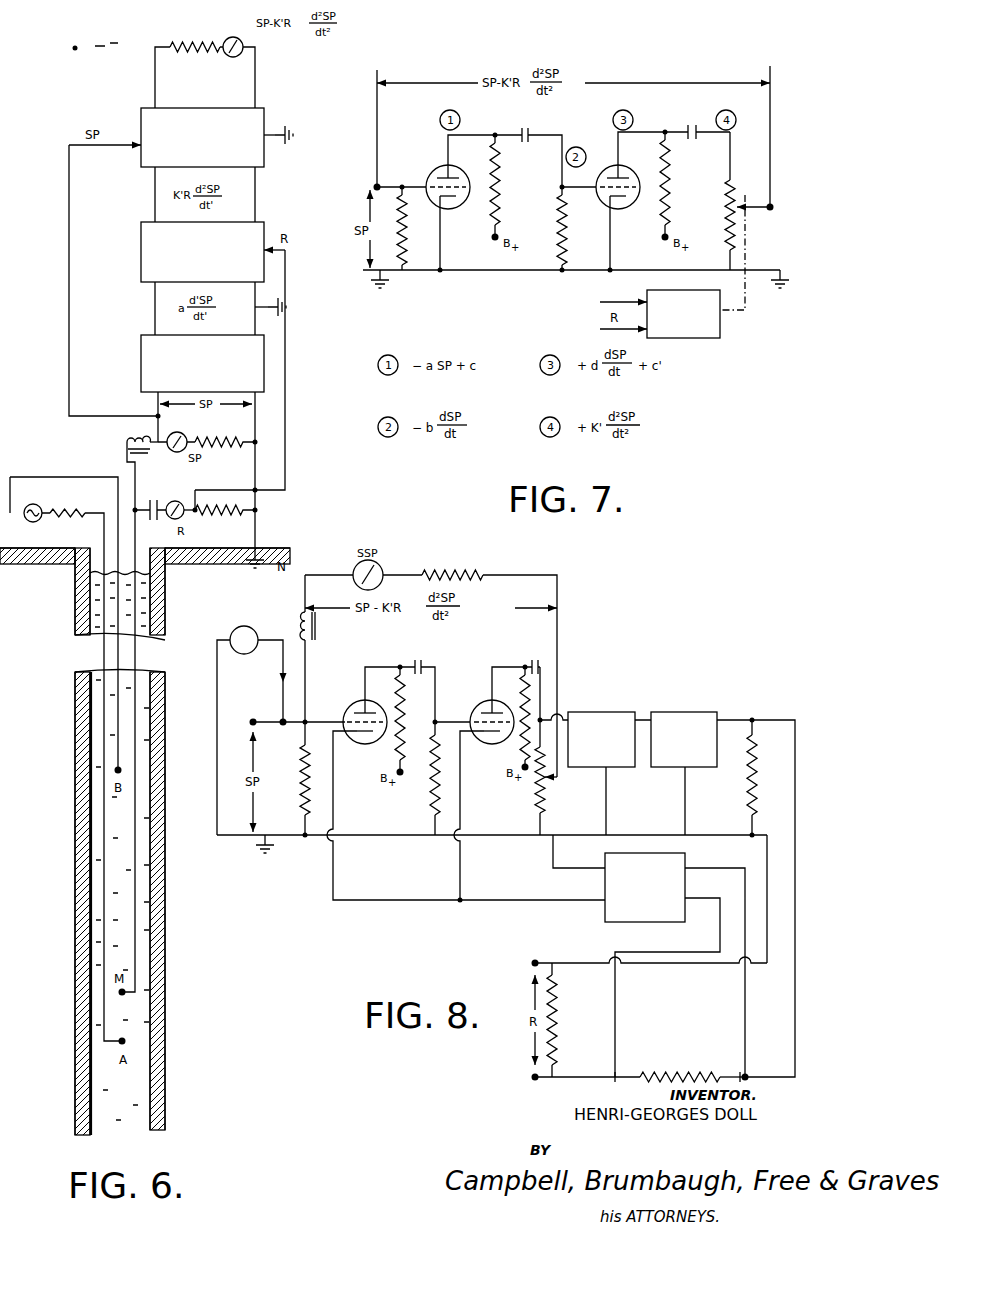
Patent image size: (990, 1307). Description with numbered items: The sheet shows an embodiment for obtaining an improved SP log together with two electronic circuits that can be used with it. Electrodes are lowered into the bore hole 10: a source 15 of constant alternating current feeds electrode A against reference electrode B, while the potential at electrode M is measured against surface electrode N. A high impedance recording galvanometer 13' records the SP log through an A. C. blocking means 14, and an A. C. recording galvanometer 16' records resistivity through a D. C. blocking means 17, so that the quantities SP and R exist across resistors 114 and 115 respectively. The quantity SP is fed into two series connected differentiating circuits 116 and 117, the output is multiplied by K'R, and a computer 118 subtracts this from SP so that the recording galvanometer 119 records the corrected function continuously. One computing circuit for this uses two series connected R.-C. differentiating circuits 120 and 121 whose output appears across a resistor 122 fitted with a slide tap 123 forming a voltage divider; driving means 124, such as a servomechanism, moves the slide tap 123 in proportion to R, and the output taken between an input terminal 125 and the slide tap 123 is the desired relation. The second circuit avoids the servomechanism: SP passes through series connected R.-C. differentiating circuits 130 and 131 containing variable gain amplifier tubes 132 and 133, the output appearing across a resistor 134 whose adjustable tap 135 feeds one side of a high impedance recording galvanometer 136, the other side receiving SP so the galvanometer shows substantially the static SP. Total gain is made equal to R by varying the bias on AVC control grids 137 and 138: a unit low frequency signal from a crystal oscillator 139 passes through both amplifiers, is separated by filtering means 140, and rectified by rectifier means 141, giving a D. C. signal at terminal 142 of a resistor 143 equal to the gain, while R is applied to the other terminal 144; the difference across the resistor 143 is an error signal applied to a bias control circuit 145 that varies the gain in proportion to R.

In FIG. 6, the bore hole 10 is at (148, 558).
In FIG. 6, the high impedance recording galvanometer 13' is at (176, 429).
In FIG. 6, the A. C. blocking means 14 is at (127, 438).
In FIG. 6, the source of alternating current 15 is at (82, 508).
In FIG. 6, the A. C. recording galvanometer 16' is at (179, 496).
In FIG. 6, the D. C. blocking means 17 is at (148, 500).
In FIG. 6, the resistor 114 is at (214, 440).
In FIG. 6, the resistor 115 is at (213, 515).
In FIG. 6, the differentiating circuit 116 is at (202, 363).
In FIG. 6, the differentiating circuit 117 is at (202, 252).
In FIG. 6, the computer 118 is at (202, 137).
In FIG. 6, the recording galvanometer 119 is at (233, 37).
In FIG. 7, the R.-C. differentiating circuit 120 is at (474, 202).
In FIG. 7, the R.-C. differentiating circuit 121 is at (642, 201).
In FIG. 7, the resistor 122 is at (738, 197).
In FIG. 7, the slide tap 123 is at (744, 212).
In FIG. 7, the driving means 124 is at (700, 338).
In FIG. 7, the input terminal 125 is at (375, 184).
In FIG. 8, the R.-C. differentiating circuit 130 is at (382, 772).
In FIG. 8, the R.-C. differentiating circuit 131 is at (496, 815).
In FIG. 8, the electronic tube 132 is at (350, 705).
In FIG. 8, the electronic tube 133 is at (483, 702).
In FIG. 8, the resistor 134 is at (536, 792).
In FIG. 8, the adjustable tap 135 is at (558, 782).
In FIG. 8, the high impedance recording galvanometer 136 is at (400, 574).
In FIG. 8, the AVC control grid 137 is at (386, 736).
In FIG. 8, the AVC control grid 138 is at (475, 722).
In FIG. 8, the crystal oscillator 139 is at (254, 628).
In FIG. 8, the filtering means 140 is at (600, 711).
In FIG. 8, the rectifier means 141 is at (680, 711).
In FIG. 8, the terminal 142 is at (742, 1076).
In FIG. 8, the resistor 143 is at (674, 1072).
In FIG. 8, the terminal 144 is at (623, 1077).
In FIG. 8, the bias control circuit 145 is at (645, 887).